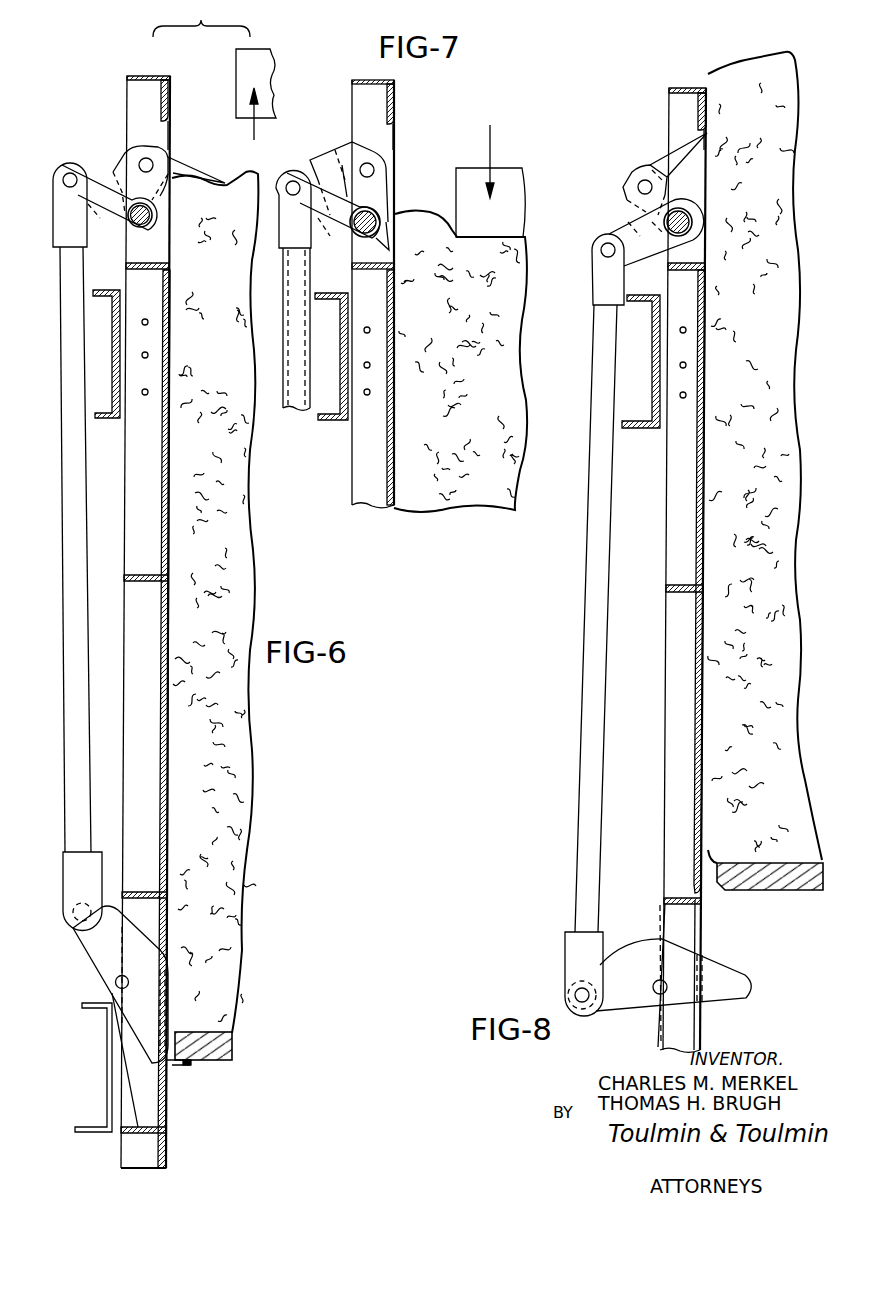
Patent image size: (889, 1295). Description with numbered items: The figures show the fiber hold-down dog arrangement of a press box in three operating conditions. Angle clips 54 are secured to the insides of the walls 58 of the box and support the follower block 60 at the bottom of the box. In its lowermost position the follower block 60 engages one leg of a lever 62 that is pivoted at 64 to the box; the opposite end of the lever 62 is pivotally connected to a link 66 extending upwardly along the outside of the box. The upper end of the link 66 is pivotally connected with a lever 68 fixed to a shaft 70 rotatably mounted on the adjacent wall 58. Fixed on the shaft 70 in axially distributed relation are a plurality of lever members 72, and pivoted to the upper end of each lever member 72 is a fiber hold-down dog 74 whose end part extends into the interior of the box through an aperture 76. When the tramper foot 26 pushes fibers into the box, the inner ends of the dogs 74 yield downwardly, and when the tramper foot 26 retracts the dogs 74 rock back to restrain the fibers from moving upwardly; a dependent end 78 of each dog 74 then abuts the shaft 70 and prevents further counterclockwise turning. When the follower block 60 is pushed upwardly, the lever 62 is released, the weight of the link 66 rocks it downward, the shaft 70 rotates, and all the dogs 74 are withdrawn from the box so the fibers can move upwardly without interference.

In FIG. 6, the tramper foot 26 is at (272, 64).
In FIG. 7, the tramper foot 26 is at (517, 217).
In FIG. 6, the angle clips 54 is at (188, 1066).
In FIG. 6, the walls 58 is at (164, 778).
In FIG. 7, the walls 58 is at (390, 462).
In FIG. 8, the walls 58 is at (700, 690).
In FIG. 6, the follower block 60 is at (225, 1045).
In FIG. 8, the follower block 60 is at (750, 890).
In FIG. 6, the lever 62 is at (97, 940).
In FIG. 8, the lever 62 is at (628, 965).
In FIG. 6, the pivot 64 is at (114, 982).
In FIG. 8, the pivot 64 is at (658, 994).
In FIG. 6, the link 66 is at (77, 733).
In FIG. 7, the link 66 is at (292, 322).
In FIG. 8, the link 66 is at (592, 545).
In FIG. 6, the lever 68 is at (95, 190).
In FIG. 7, the lever 68 is at (317, 182).
In FIG. 8, the lever 68 is at (636, 253).
In FIG. 6, the shaft 70 is at (140, 228).
In FIG. 7, the shaft 70 is at (374, 215).
In FIG. 8, the shaft 70 is at (680, 212).
In FIG. 6, the lever members 72 is at (148, 152).
In FIG. 7, the lever members 72 is at (387, 162).
In FIG. 8, the lever members 72 is at (628, 178).
In FIG. 6, the fiber hold-down dog 74 is at (172, 163).
In FIG. 7, the fiber hold-down dog 74 is at (372, 236).
In FIG. 8, the fiber hold-down dog 74 is at (662, 165).
In FIG. 6, the aperture 76 is at (173, 128).
In FIG. 7, the aperture 76 is at (394, 133).
In FIG. 8, the aperture 76 is at (705, 133).
In FIG. 6, the dependent end 78 is at (103, 232).
In FIG. 7, the dependent end 78 is at (332, 241).
In FIG. 8, the dependent end 78 is at (630, 215).